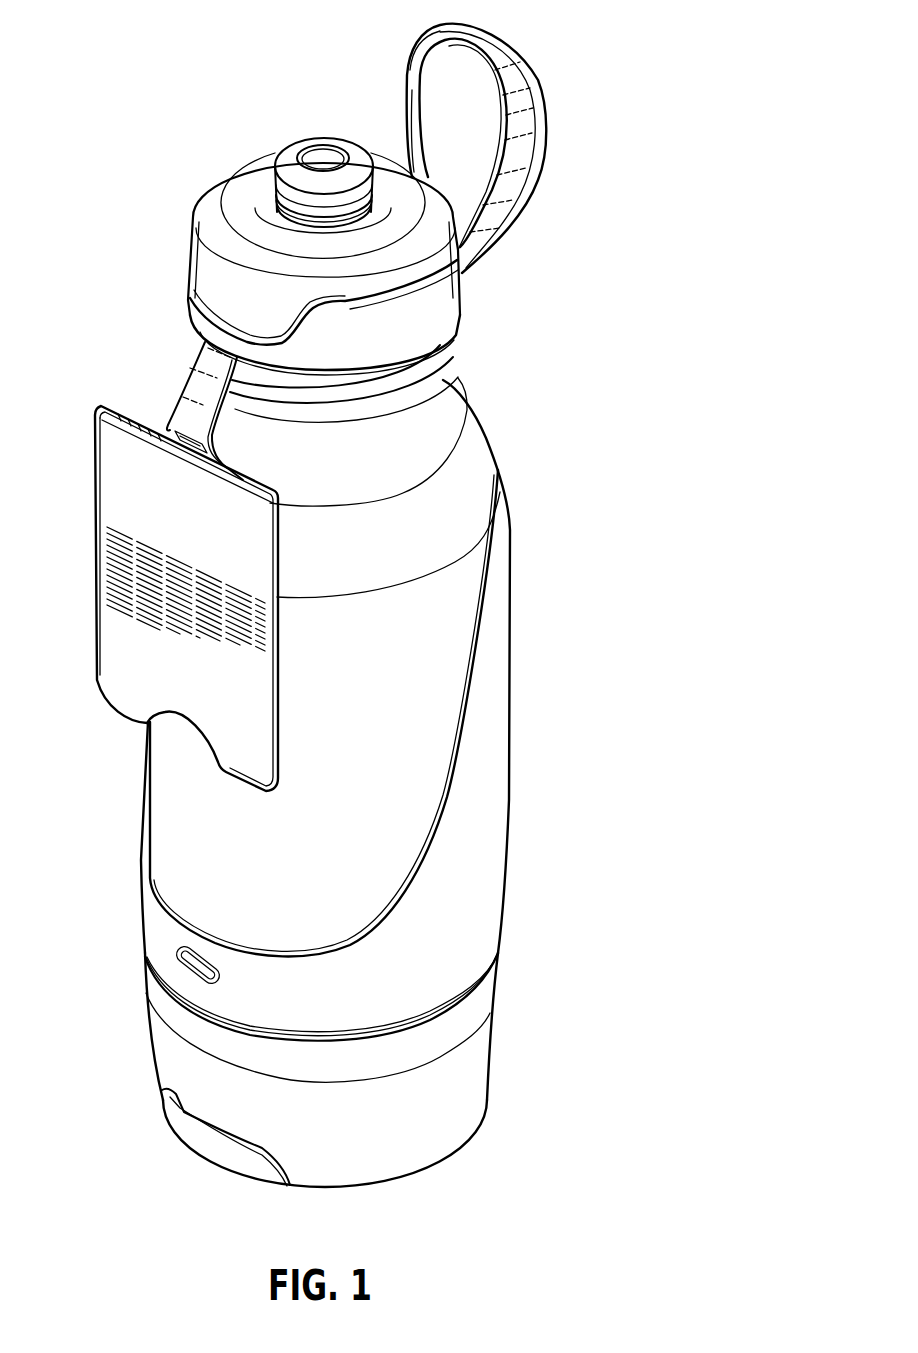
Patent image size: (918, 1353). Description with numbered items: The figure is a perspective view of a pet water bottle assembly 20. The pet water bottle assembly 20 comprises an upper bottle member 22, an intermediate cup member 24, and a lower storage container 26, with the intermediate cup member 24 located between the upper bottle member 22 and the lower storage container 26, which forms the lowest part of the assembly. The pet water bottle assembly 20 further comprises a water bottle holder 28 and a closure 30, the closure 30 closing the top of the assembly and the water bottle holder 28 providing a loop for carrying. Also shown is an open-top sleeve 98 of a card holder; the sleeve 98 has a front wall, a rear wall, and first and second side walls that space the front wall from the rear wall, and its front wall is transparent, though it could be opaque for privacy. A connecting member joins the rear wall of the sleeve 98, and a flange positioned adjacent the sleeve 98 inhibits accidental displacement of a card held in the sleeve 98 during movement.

The pet water bottle assembly 20 is at (650, 20).
The upper bottle member 22 is at (167, 750).
The intermediate cup member 24 is at (508, 860).
The lower storage container 26 is at (167, 1073).
The water bottle holder 28 is at (533, 192).
The closure 30 is at (197, 213).
The open-top sleeve 98 is at (131, 406).